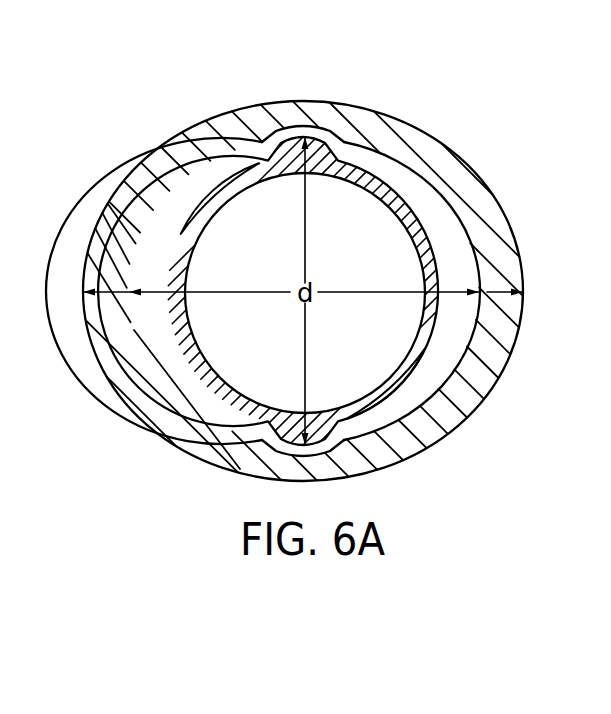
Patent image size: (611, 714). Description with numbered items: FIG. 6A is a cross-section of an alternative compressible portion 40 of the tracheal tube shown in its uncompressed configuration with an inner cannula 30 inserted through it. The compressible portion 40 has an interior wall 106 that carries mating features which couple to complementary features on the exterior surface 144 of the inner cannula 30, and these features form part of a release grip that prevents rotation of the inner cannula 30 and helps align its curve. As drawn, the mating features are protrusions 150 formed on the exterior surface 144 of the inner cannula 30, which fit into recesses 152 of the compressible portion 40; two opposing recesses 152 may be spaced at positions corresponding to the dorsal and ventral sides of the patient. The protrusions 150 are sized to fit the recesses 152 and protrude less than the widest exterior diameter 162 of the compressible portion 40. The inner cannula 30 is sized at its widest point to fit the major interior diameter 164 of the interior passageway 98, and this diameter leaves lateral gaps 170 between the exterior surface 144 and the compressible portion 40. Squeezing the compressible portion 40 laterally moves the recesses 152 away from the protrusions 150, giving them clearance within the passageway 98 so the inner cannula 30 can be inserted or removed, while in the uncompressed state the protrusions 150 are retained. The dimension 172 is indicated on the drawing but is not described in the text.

The inner cannula 30 is at (470, 417).
The compressible portion 40 is at (493, 360).
The interior passageway 98 is at (182, 200).
The interior wall 106 is at (462, 246).
The exterior surface 144 is at (446, 271).
The protrusion 150 is at (334, 108).
The recess 152 is at (274, 128).
The widest exterior diameter 162 is at (484, 318).
The major interior diameter 164 is at (338, 298).
The lateral gap 170 is at (101, 224).
The lumen diameter 172 is at (307, 250).